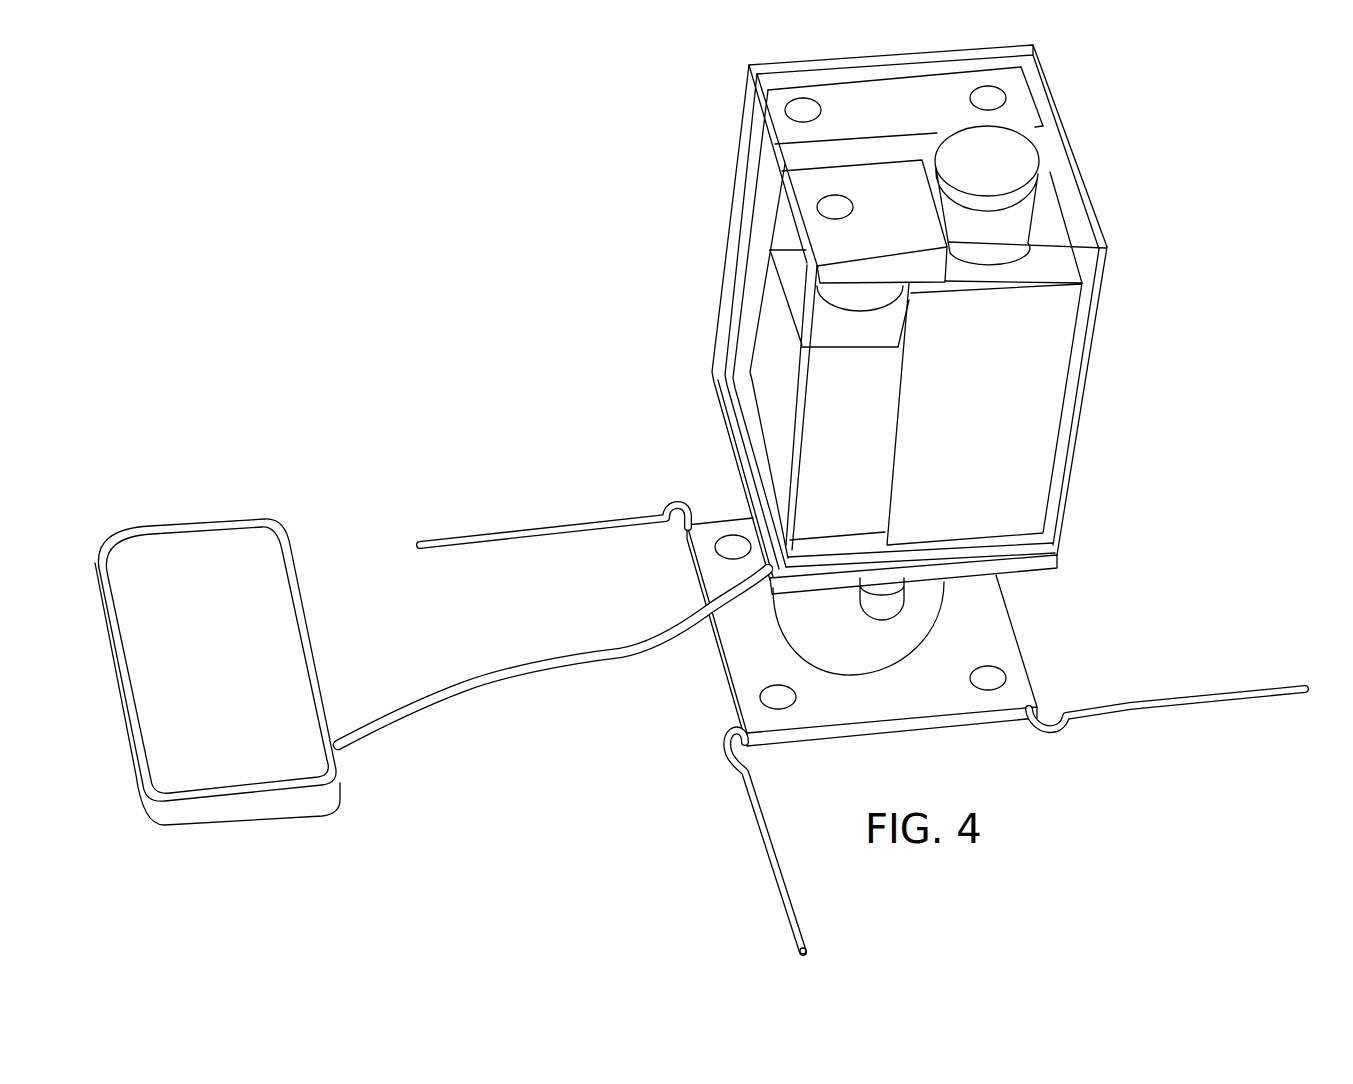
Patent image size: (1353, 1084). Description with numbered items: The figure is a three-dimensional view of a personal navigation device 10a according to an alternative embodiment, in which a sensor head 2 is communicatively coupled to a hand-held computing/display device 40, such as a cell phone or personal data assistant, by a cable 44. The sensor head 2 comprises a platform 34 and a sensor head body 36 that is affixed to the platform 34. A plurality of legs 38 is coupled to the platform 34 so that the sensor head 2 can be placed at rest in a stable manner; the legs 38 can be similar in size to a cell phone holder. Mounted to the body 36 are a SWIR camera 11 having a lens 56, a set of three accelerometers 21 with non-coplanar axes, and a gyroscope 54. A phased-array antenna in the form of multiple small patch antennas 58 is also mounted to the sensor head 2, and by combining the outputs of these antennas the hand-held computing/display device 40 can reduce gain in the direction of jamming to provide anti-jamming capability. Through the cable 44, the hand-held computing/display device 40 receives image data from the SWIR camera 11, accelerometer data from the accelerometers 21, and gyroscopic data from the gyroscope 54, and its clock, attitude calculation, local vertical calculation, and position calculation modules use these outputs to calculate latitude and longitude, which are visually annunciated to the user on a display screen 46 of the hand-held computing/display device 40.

The personal navigation device 10a is at (527, 247).
The sensor head 2 is at (1103, 209).
The SWIR camera 11 is at (1030, 470).
The accelerometers 21 is at (765, 432).
The platform 34 is at (1010, 612).
The sensor head body 36 is at (1092, 343).
The legs 38 is at (575, 517).
The hand-held computing/display device 40 is at (172, 520).
The cable 44 is at (572, 688).
The display screen 46 is at (300, 658).
The gyroscope 54 is at (802, 187).
The lens 56 is at (1043, 170).
The patch antennas 58 is at (788, 104).